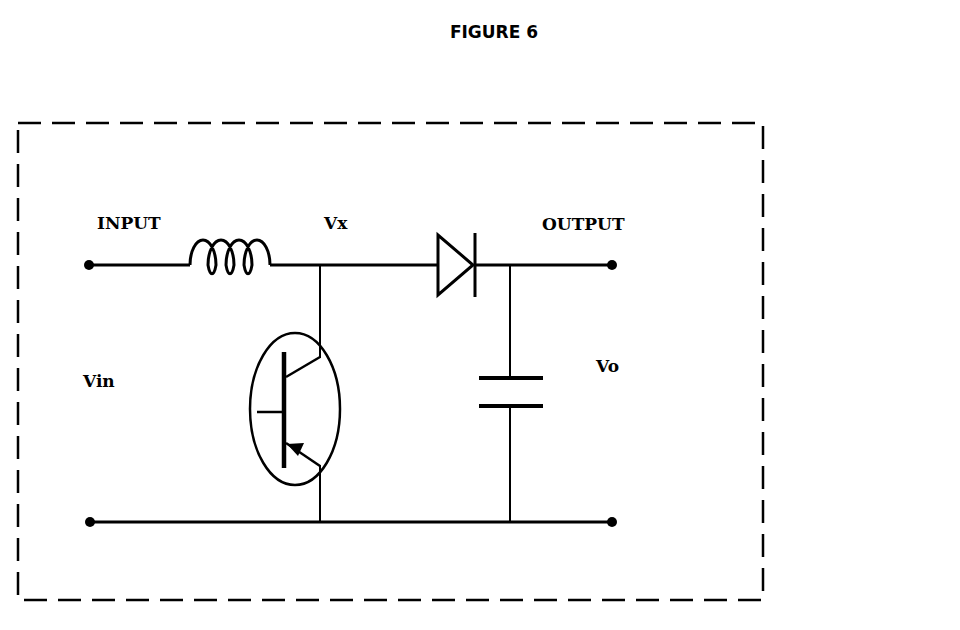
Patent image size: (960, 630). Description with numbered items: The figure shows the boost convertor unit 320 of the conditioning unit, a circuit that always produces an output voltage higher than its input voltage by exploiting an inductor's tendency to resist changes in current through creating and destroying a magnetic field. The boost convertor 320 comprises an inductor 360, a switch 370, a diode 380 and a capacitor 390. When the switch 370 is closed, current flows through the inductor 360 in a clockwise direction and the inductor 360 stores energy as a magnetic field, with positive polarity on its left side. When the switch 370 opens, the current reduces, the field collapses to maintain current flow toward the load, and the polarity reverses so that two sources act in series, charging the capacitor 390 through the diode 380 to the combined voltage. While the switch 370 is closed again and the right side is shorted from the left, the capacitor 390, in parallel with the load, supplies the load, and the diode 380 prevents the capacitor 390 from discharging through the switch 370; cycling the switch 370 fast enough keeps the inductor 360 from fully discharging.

The boost convertor unit 320 is at (789, 536).
The inductor 360 is at (207, 216).
The switch 370 is at (255, 417).
The diode 380 is at (438, 230).
The capacitor 390 is at (530, 409).